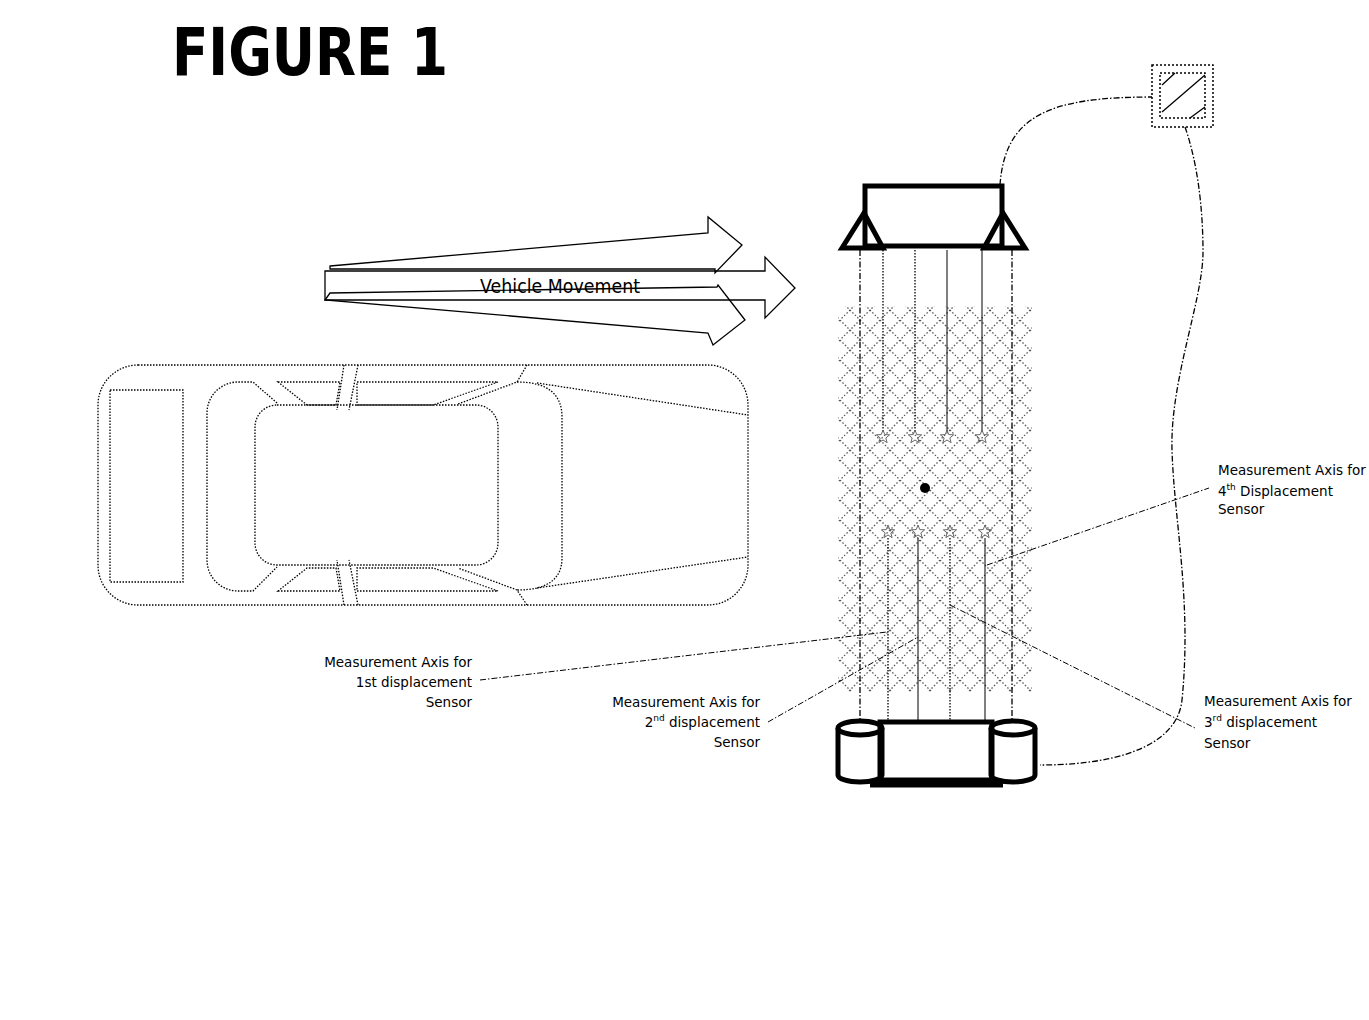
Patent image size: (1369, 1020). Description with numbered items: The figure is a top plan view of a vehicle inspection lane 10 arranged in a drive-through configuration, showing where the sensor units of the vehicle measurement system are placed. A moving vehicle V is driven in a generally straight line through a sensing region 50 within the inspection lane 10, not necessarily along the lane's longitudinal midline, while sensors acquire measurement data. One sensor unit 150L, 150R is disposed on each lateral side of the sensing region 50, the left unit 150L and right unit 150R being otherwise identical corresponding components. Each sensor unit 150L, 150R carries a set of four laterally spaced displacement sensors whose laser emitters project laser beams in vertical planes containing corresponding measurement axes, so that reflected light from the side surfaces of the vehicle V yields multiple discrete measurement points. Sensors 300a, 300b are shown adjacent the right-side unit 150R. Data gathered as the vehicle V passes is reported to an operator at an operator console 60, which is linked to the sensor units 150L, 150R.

The vehicle V is at (335, 488).
The vehicle inspection lane 10 is at (360, 732).
The left sensor unit 150L is at (937, 183).
The right sensor unit 150R is at (977, 763).
The operator console 60 is at (1173, 72).
The sensing region 50 is at (930, 486).
The first displacement sensor 300a is at (853, 758).
The second displacement sensor 300b is at (1013, 753).